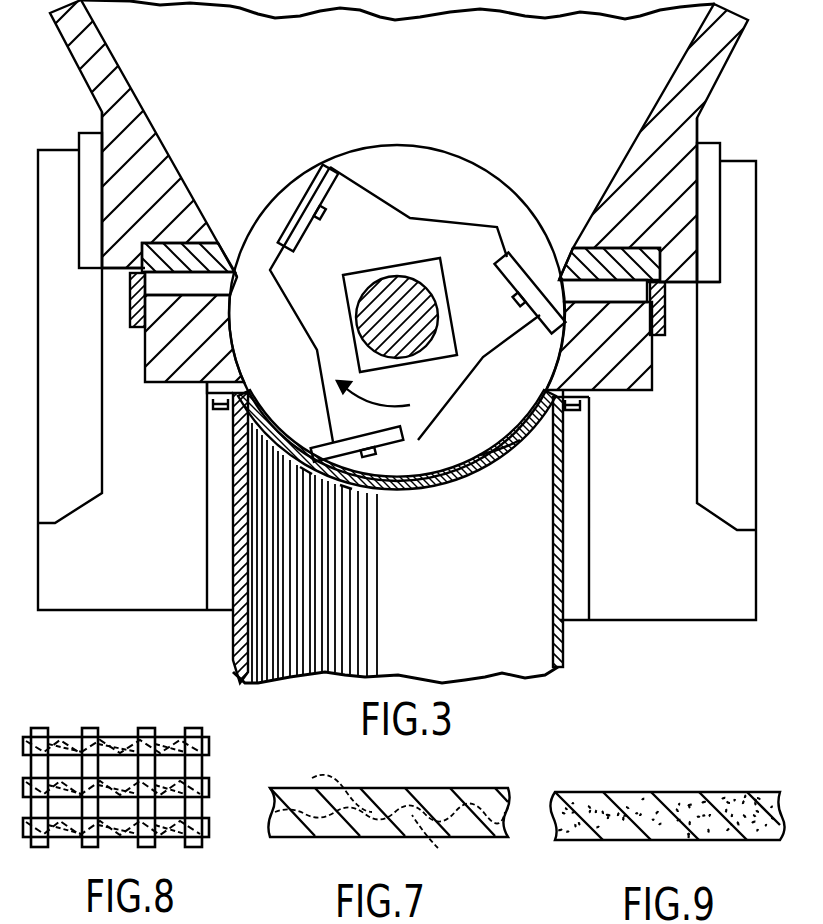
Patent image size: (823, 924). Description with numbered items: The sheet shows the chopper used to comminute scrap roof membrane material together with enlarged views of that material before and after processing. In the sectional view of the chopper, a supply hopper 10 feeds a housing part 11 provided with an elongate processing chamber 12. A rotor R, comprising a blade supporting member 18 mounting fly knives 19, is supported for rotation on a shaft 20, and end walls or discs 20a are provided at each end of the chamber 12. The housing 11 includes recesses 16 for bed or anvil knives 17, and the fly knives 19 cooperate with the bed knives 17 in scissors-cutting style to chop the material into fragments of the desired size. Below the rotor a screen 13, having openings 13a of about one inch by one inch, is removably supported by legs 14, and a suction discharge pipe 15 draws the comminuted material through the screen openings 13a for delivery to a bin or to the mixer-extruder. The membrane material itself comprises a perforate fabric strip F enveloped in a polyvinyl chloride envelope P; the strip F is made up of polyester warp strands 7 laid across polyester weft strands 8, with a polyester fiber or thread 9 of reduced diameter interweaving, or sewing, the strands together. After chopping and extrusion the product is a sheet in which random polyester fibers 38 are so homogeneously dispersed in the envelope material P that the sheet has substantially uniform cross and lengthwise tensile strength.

In FIG. 3, the supply hopper 10 is at (718, 50).
In FIG. 3, the housing part 11 is at (622, 375).
In FIG. 3, the elongate processing chamber 12 is at (594, 365).
In FIG. 3, the screen 13 is at (470, 480).
In FIG. 3, the screen openings 13a is at (440, 490).
In FIG. 3, the legs 14 is at (207, 568).
In FIG. 3, the suction discharge pipe 15 is at (563, 650).
In FIG. 3, the recesses 16 is at (176, 301).
In FIG. 3, the bed or anvil knives 17 is at (212, 288).
In FIG. 3, the blade supporting member 18 is at (373, 216).
In FIG. 3, the fly knives 19 is at (313, 192).
In FIG. 3, the shaft 20 is at (438, 315).
In FIG. 3, the end walls or discs 20a is at (478, 428).
In FIG. 3, the rotor R is at (445, 215).
In FIG. 8, the polyester warp strands 7 is at (175, 744).
In FIG. 8, the polyester weft strands 8 is at (80, 733).
In FIG. 8, the polyester fiber or thread 9 is at (128, 744).
In FIG. 7, the polyvinyl chloride envelope P is at (468, 790).
In FIG. 9, the polyvinyl chloride envelope P is at (716, 793).
In FIG. 7, the perforate fabric strip F is at (390, 810).
In FIG. 9, the dispersed fibers 38 is at (682, 795).